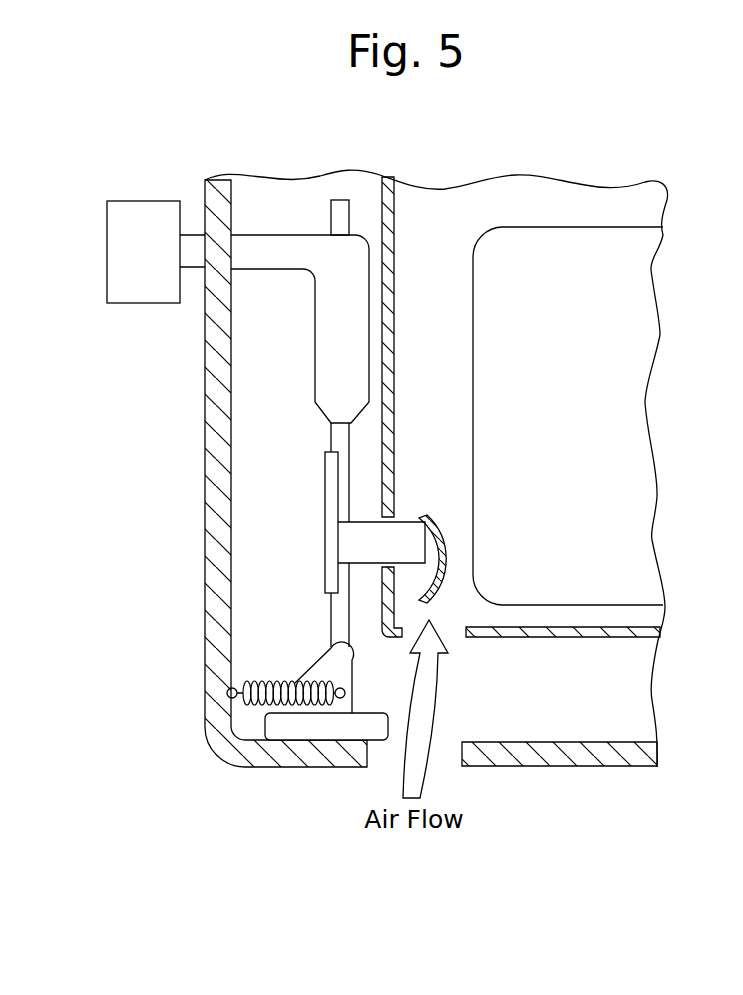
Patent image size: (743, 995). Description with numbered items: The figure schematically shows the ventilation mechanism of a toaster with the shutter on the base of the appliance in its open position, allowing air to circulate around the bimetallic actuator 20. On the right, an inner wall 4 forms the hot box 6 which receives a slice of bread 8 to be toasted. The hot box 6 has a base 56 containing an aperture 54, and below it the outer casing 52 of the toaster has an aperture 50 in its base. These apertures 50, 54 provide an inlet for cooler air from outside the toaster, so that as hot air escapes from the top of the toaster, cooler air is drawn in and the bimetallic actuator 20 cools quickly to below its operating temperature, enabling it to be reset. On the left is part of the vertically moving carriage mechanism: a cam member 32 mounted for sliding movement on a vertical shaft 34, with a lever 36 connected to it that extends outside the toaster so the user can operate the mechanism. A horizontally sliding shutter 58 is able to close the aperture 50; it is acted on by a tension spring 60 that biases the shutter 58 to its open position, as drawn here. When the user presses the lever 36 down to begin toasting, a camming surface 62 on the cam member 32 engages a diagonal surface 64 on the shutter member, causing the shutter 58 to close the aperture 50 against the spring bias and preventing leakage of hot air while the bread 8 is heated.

The lever 36 is at (137, 218).
The cam member 32 is at (268, 247).
The vertical shaft 34 is at (340, 208).
The inner wall 4 is at (388, 220).
The bread 8 is at (563, 248).
The hot box 6 is at (437, 405).
The camming surface 62 is at (338, 397).
The bimetallic actuator 20 is at (440, 556).
The outer casing 52 is at (215, 487).
The diagonal surface 64 is at (320, 667).
The tension spring 60 is at (258, 703).
The shutter 58 is at (302, 727).
The aperture 54 is at (457, 632).
The base 56 is at (615, 637).
The aperture 50 is at (445, 755).